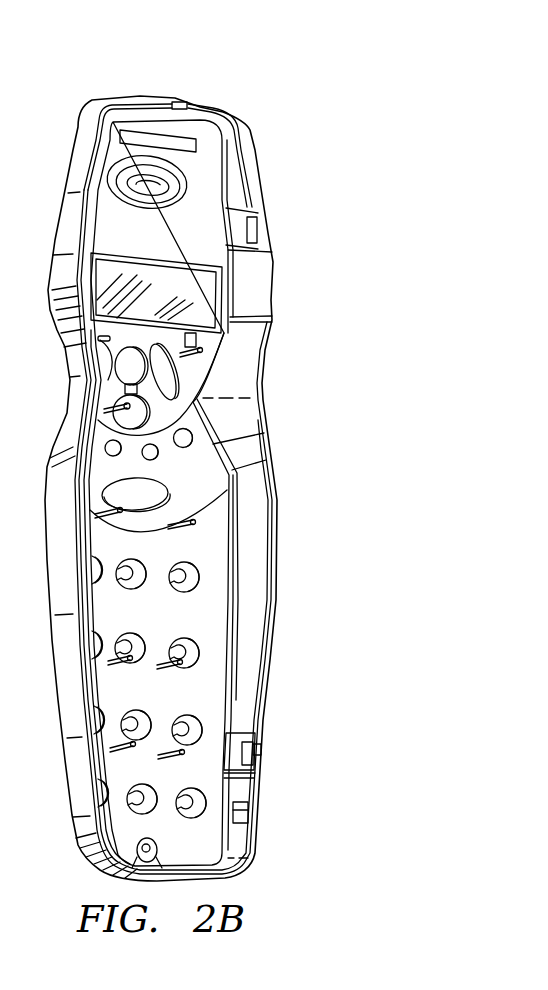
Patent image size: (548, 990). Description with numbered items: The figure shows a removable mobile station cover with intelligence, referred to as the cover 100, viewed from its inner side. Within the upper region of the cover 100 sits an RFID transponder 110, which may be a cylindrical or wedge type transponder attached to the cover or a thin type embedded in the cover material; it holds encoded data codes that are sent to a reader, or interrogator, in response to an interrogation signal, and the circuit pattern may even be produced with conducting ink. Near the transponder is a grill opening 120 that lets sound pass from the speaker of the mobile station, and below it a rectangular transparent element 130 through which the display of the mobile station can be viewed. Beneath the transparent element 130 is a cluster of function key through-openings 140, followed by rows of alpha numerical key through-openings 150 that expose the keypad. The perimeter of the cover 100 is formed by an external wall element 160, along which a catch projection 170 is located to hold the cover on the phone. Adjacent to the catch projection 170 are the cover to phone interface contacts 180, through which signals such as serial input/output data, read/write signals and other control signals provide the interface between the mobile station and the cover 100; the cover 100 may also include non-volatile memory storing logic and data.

The cover 100 is at (241, 73).
The RFID transponder 110 is at (196, 142).
The grill opening 120 is at (178, 196).
The transparent element 130 is at (115, 275).
The function key through-openings 140 is at (163, 383).
The alpha numerical key through-openings 150 is at (190, 582).
The external wall element 160 is at (259, 667).
The catch projection 170 is at (250, 754).
The cover to phone interface contacts 180 is at (248, 799).